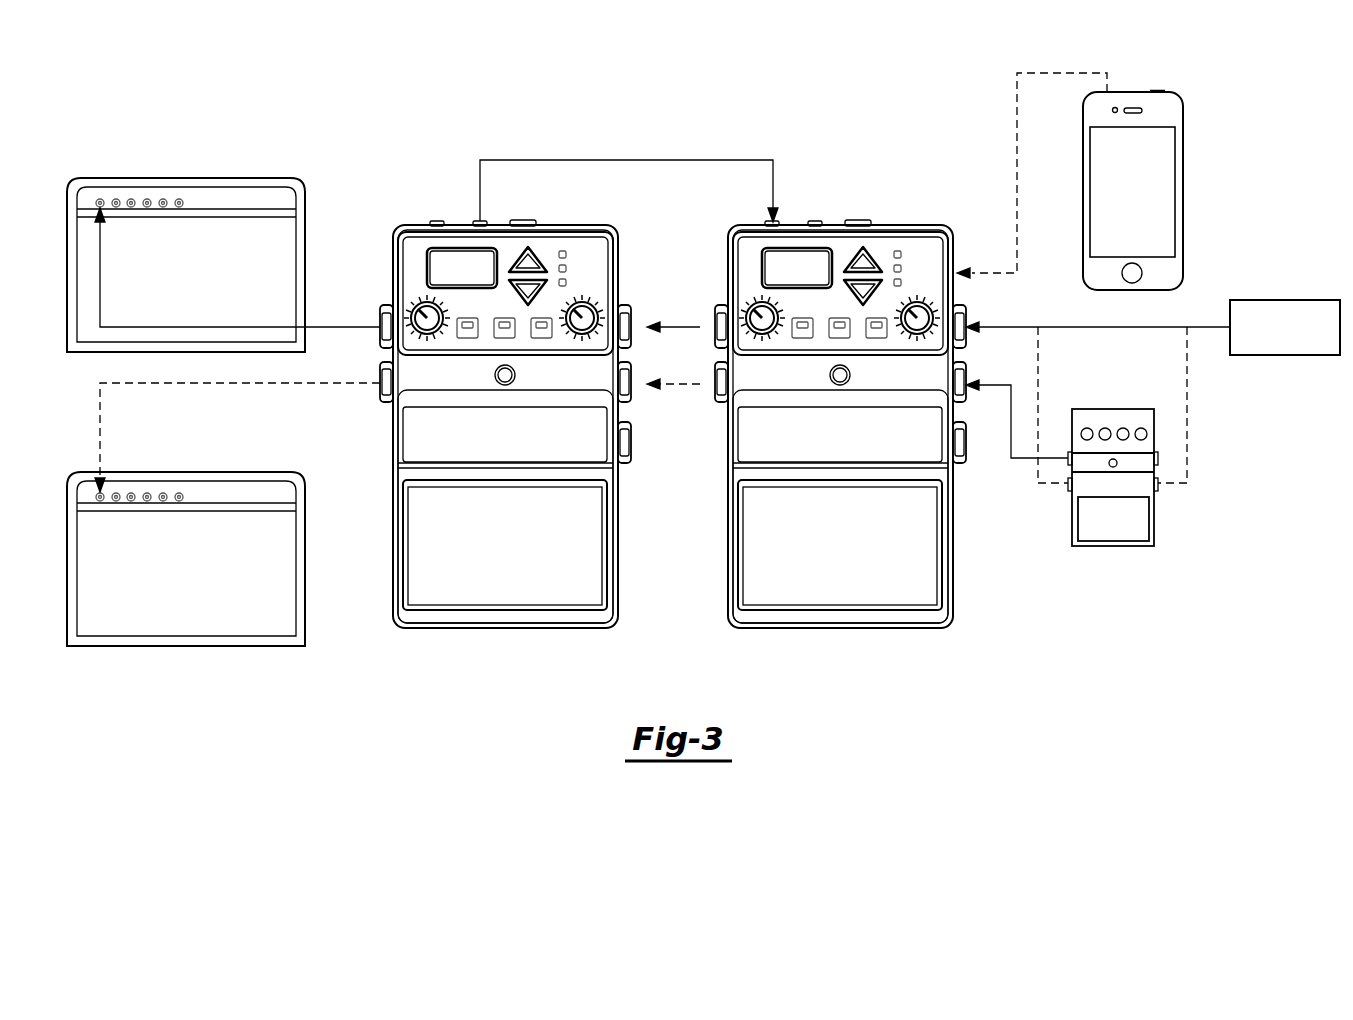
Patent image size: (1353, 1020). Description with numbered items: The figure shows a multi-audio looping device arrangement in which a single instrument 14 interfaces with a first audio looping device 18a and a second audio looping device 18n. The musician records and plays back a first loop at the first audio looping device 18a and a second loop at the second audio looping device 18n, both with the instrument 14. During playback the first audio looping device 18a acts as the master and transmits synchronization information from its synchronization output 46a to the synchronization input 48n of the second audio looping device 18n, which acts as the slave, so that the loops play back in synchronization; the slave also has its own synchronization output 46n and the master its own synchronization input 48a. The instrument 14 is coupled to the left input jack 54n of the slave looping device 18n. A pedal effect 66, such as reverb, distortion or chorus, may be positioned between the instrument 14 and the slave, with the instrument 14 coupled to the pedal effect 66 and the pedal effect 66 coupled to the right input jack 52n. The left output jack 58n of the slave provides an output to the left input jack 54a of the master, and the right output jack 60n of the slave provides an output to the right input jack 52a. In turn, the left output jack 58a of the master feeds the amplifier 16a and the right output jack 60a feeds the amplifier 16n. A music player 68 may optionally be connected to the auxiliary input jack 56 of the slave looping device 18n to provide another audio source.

The instrument 14 is at (1287, 300).
The amplifier 16a is at (192, 178).
The amplifier 16n is at (187, 645).
The first audio looping device 18a is at (505, 628).
The second audio looping device 18n is at (840, 628).
The synchronization output 46a is at (476, 221).
The synchronization output 46n is at (812, 221).
The synchronization input 48a is at (437, 221).
The synchronization input 48n is at (779, 221).
The right input jack 52a is at (634, 412).
The right input jack 52n is at (968, 378).
The left input jack 54a is at (628, 303).
The left input jack 54n is at (968, 318).
The auxiliary input jack 56 is at (953, 272).
The left output jack 58a is at (383, 303).
The left output jack 58n is at (716, 303).
The right output jack 60a is at (385, 405).
The right output jack 60n is at (718, 405).
The pedal effect 66 is at (1154, 525).
The music player 68 is at (1183, 122).